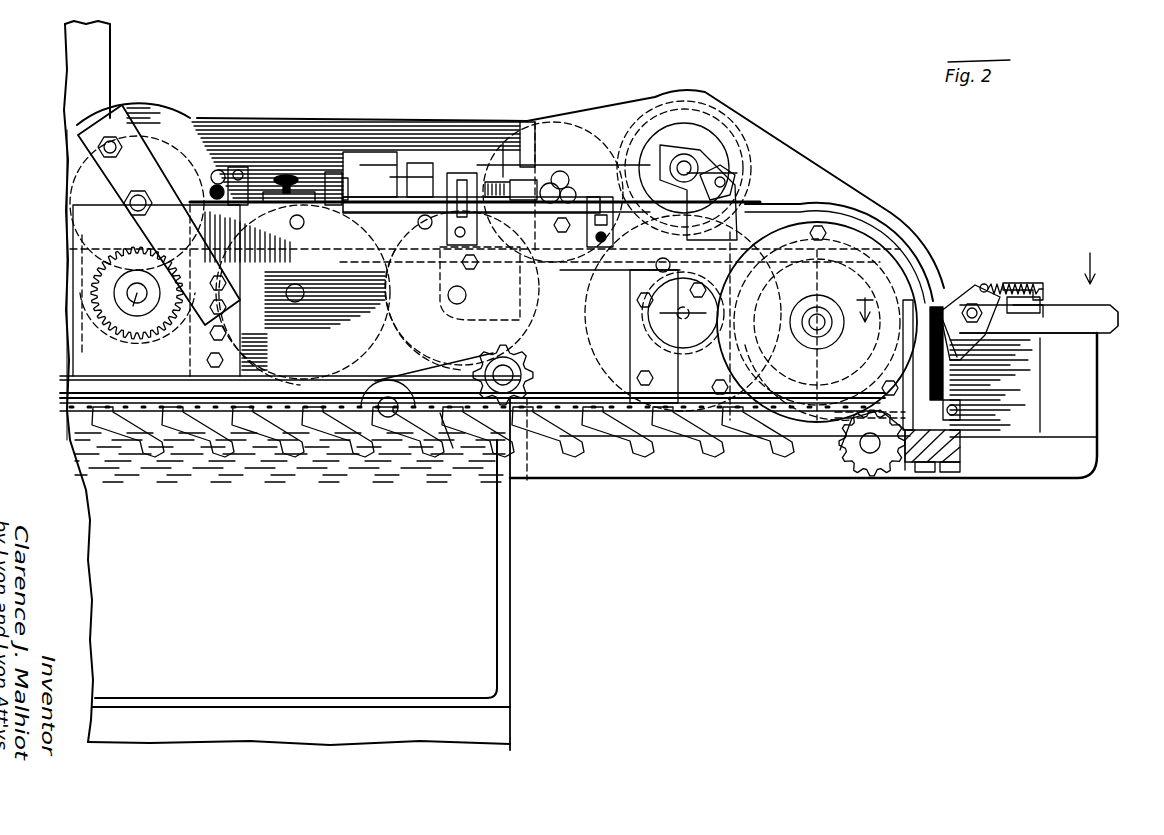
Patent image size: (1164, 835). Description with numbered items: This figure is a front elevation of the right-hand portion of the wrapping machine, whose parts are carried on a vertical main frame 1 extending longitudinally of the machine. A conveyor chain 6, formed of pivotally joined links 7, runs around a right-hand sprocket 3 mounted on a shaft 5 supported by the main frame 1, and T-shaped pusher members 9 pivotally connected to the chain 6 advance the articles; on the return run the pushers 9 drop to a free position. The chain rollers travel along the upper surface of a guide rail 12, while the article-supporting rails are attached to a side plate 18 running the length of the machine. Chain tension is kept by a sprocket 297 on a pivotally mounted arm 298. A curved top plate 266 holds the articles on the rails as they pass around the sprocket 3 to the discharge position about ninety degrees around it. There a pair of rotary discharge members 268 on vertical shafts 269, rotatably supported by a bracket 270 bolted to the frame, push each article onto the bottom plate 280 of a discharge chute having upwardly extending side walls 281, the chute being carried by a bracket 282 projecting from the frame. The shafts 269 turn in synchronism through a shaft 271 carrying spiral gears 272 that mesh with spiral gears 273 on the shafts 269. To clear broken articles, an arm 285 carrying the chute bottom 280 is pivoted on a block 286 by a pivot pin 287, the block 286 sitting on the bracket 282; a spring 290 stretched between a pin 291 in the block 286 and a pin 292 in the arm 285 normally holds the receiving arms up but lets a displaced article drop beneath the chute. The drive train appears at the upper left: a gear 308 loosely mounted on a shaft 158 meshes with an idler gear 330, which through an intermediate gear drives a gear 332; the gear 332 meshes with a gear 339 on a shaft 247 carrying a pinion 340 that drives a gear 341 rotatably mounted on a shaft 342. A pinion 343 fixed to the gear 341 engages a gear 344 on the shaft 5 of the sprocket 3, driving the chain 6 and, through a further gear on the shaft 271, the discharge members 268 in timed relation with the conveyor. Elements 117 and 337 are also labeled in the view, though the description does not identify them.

The main frame 1 is at (505, 637).
The sprocket 3 is at (817, 322).
The shaft 5 is at (815, 330).
The conveyor chain 6 is at (551, 393).
The links 7 is at (440, 403).
The pusher members 9 is at (290, 449).
The guide rail 12 is at (977, 277).
The side plate 18 is at (340, 263).
The pivot nut 117 is at (138, 197).
The shaft 158 is at (133, 306).
The shaft 247 is at (718, 162).
The curved top plate 266 is at (880, 222).
The rotary discharge members 268 is at (940, 305).
The shafts 269 is at (950, 380).
The bracket 270 is at (870, 462).
The shaft 271 is at (850, 467).
The spiral gears 272 is at (890, 470).
The spiral gears 273 is at (937, 458).
The bottom plate 280 is at (1060, 334).
The side walls 281 is at (1097, 325).
The bracket 282 is at (1023, 342).
The arm 285 is at (1005, 288).
The block 286 is at (1010, 312).
The pivot pin 287 is at (975, 303).
The spring 290 is at (1017, 287).
The pin 291 is at (1045, 313).
The pin 292 is at (985, 285).
The sprocket 297 is at (520, 360).
The arm 298 is at (457, 439).
The gear 308 is at (70, 345).
The idler gear 330 is at (363, 353).
The gear 332 is at (502, 143).
The band guide 337 is at (382, 323).
The gear 339 is at (692, 160).
The pinion 340 is at (742, 185).
The gear 341 is at (598, 283).
The shaft 342 is at (656, 316).
The pinion 343 is at (662, 334).
The gear 344 is at (798, 222).